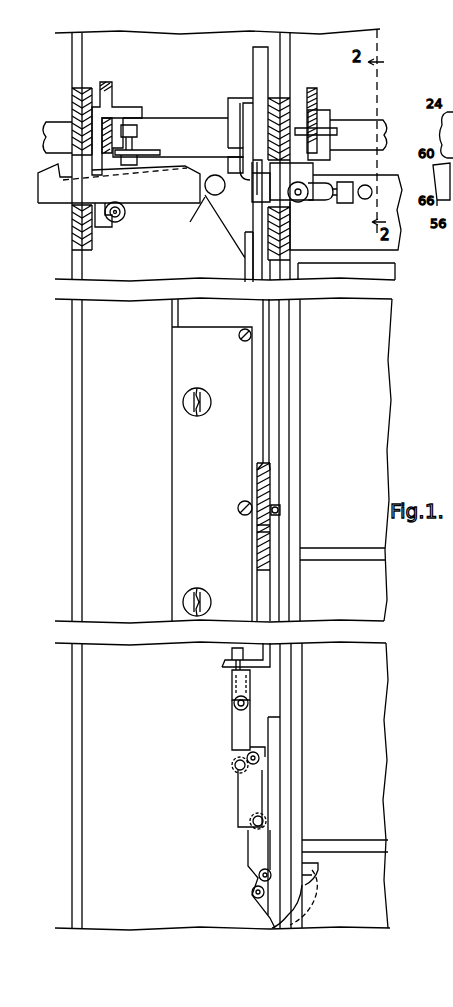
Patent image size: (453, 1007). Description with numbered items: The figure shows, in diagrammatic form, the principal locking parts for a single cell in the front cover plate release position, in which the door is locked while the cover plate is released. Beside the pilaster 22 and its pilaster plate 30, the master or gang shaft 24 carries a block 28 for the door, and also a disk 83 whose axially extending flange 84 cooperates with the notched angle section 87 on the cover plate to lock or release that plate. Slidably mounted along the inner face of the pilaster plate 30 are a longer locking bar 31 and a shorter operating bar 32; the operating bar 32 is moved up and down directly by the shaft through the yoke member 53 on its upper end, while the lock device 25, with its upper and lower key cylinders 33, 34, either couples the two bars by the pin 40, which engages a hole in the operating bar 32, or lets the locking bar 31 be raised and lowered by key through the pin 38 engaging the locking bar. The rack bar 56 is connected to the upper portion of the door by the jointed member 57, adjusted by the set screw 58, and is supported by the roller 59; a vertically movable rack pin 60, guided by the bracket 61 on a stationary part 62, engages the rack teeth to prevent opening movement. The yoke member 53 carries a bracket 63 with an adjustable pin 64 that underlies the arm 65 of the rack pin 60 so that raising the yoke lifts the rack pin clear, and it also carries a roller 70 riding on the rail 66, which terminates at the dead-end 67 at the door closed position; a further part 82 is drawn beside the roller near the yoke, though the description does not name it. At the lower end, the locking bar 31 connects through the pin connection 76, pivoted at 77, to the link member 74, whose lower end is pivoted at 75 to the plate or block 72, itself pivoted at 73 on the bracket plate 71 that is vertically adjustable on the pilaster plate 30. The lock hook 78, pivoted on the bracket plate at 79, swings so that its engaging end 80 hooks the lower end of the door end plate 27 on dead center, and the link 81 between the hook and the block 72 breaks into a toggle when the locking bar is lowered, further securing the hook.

The pilaster 22 is at (104, 460).
The master or gang shaft 24 is at (386, 125).
The lock device 25 is at (212, 460).
The end plate of the door 27 is at (296, 485).
The block 28 is at (232, 97).
The pilaster plate 30 is at (287, 700).
The locking bar 31 is at (265, 437).
The operating bar 32 is at (258, 459).
The upper key cylinder 33 is at (183, 402).
The lower key cylinder 34 is at (183, 602).
The pin 38 is at (262, 527).
The pin 40 is at (258, 488).
The yoke member 53 is at (262, 65).
The rack bar 56 is at (50, 200).
The jointed member 57 is at (304, 201).
The set screw 58 is at (336, 196).
The roller 59 is at (114, 222).
The rack pin or lug 60 is at (72, 137).
The bracket 61 is at (108, 122).
The stationary part 62 is at (78, 99).
The bracket 63 is at (196, 147).
The pin 64 is at (134, 128).
The arm 65 is at (113, 106).
The rail 66 is at (63, 187).
The dead-end 67 is at (206, 192).
The roller 70 is at (212, 197).
The bracket plate 71 is at (272, 786).
The plate or block 72 is at (245, 804).
The pivot point 73 is at (258, 758).
The link member 74 is at (240, 736).
The pivot 75 is at (238, 769).
The pin connection 76 is at (232, 686).
The pivot 77 is at (236, 704).
The lock hook 78 is at (306, 898).
The pivot point 79 is at (262, 878).
The engaging end 80 is at (305, 876).
The link 81 is at (258, 846).
The lever 82 is at (262, 168).
The disk 83 is at (300, 106).
The flange 84 is at (320, 95).
The angle section 87 is at (337, 130).